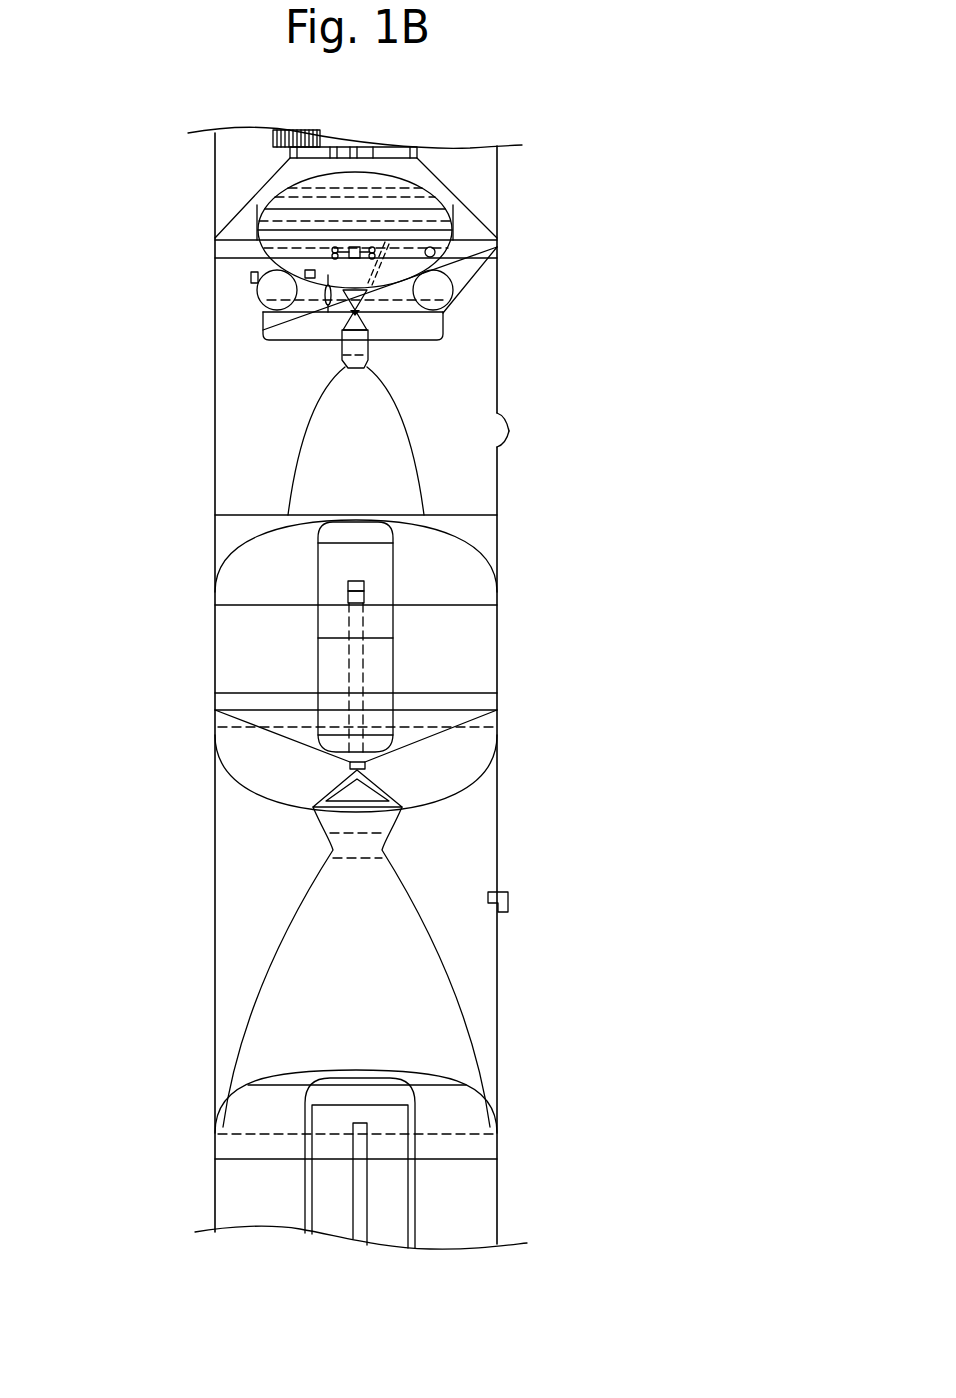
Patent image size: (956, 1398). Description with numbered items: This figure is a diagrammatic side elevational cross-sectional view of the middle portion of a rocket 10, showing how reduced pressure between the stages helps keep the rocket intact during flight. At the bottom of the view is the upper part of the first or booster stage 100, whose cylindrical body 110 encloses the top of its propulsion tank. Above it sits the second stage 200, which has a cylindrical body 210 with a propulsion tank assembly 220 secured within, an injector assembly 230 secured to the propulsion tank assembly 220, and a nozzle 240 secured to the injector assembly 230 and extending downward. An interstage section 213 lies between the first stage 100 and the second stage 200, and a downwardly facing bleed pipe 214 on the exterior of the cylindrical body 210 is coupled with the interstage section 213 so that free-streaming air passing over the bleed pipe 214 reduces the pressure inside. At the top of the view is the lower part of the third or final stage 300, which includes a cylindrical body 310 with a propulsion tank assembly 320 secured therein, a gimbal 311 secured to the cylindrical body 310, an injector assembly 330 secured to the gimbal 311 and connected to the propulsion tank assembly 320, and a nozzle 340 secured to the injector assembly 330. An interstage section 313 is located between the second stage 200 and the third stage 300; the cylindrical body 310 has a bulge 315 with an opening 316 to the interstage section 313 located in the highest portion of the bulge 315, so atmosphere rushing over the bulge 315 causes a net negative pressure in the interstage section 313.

The rocket 10 is at (678, 517).
The first or booster stage 100 is at (530, 1186).
The cylindrical body 110 is at (262, 1083).
The second stage 200 is at (528, 812).
The cylindrical body 210 is at (216, 945).
The interstage section 213 is at (469, 872).
The downwardly facing bleed pipe 214 is at (508, 895).
The propulsion tank assembly 220 is at (312, 807).
The injector assembly 230 is at (343, 770).
The nozzle 240 is at (260, 994).
The third or final stage 300 is at (522, 310).
The cylindrical body 310 is at (215, 418).
The gimbal 311 is at (390, 318).
The interstage section 313 is at (464, 410).
The bulge 315 is at (509, 440).
The opening 316 is at (510, 429).
The propulsion tank assembly 320 is at (238, 281).
The injector assembly 330 is at (337, 323).
The nozzle 340 is at (295, 472).